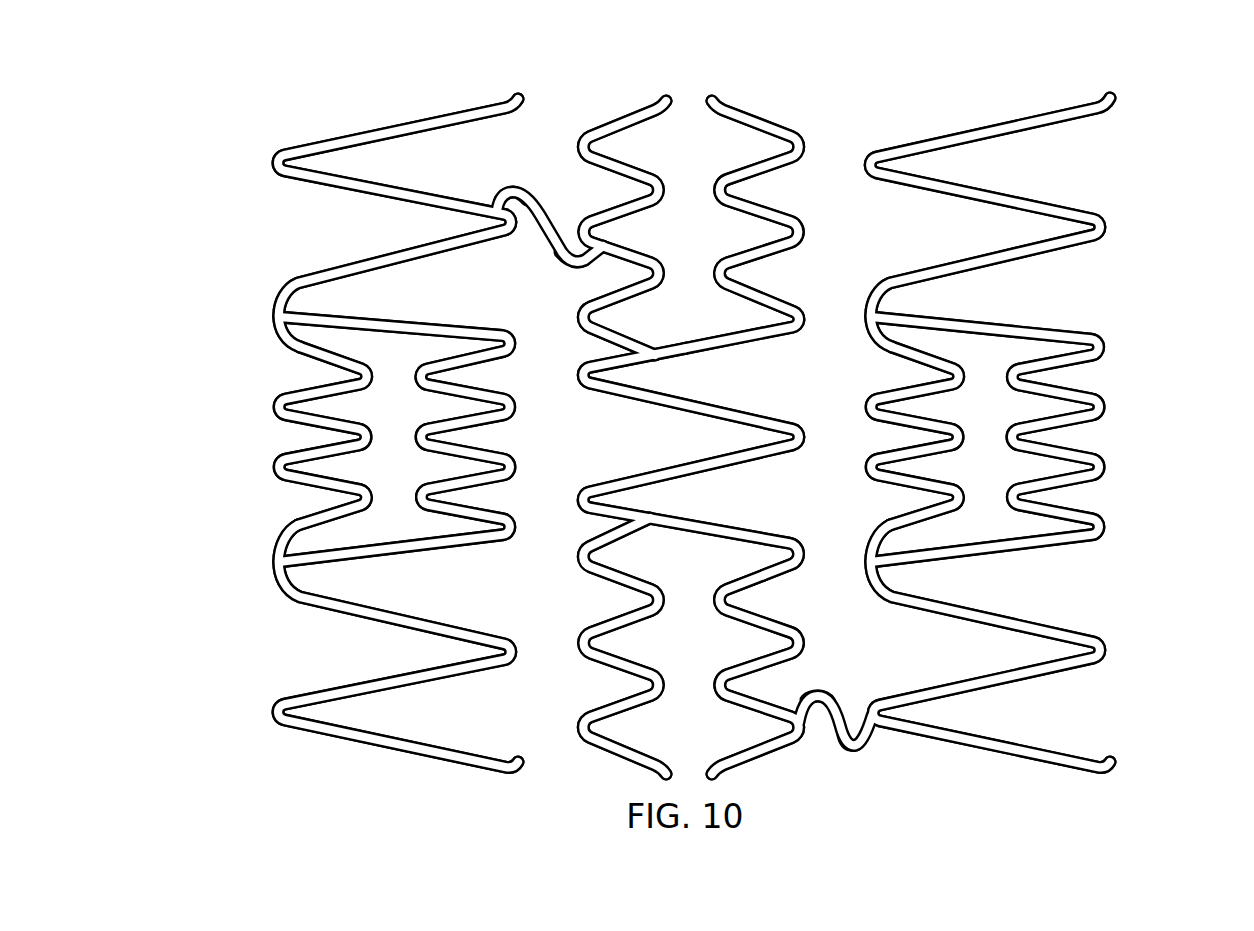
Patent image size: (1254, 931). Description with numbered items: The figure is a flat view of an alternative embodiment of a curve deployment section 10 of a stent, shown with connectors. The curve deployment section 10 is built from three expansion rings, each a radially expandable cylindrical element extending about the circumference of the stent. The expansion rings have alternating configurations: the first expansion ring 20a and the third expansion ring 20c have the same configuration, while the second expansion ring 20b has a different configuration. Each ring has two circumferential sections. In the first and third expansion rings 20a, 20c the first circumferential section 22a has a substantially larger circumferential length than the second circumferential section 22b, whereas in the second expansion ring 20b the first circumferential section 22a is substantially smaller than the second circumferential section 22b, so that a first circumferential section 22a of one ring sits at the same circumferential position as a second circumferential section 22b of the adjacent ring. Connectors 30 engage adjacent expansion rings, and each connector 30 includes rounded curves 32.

The curve deployment section 10 is at (1178, 148).
The first expansion ring 20a is at (525, 83).
The second expansion ring 20b is at (575, 83).
The third expansion ring 20c is at (848, 83).
The first circumferential section 22a is at (247, 113).
The second circumferential section 22b is at (247, 318).
The connector 30 is at (553, 223).
The curve 32 is at (513, 188).